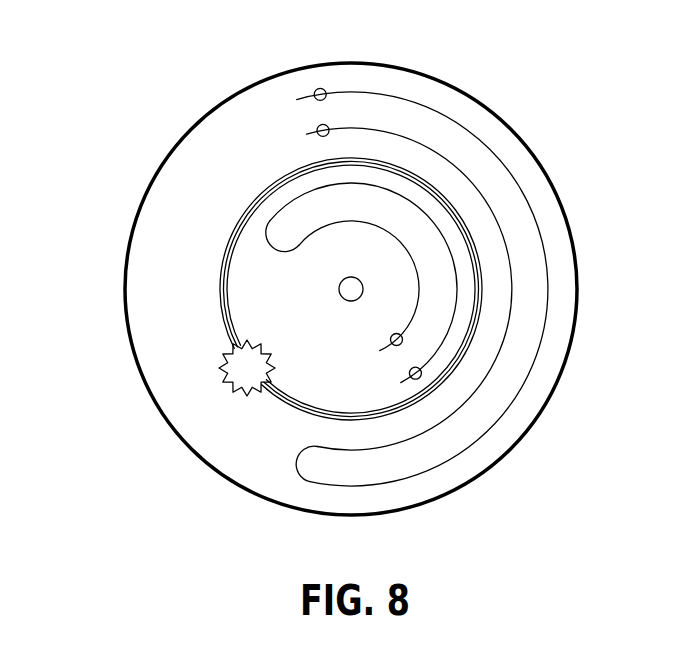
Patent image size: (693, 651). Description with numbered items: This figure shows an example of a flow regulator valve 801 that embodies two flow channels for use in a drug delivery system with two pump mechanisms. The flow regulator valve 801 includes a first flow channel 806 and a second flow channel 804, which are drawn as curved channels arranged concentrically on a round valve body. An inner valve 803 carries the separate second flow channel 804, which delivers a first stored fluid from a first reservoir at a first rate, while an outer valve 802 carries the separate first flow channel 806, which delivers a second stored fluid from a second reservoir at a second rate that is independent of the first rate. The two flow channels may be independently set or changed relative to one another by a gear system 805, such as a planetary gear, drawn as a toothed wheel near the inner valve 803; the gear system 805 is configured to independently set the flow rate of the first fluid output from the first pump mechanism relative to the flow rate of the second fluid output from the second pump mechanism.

The flow regulator valve 801 is at (354, 62).
The outer valve 802 is at (553, 247).
The inner valve 803 is at (237, 287).
The second flow channel 804 is at (393, 180).
The gear system 805 is at (216, 386).
The first flow channel 806 is at (516, 220).